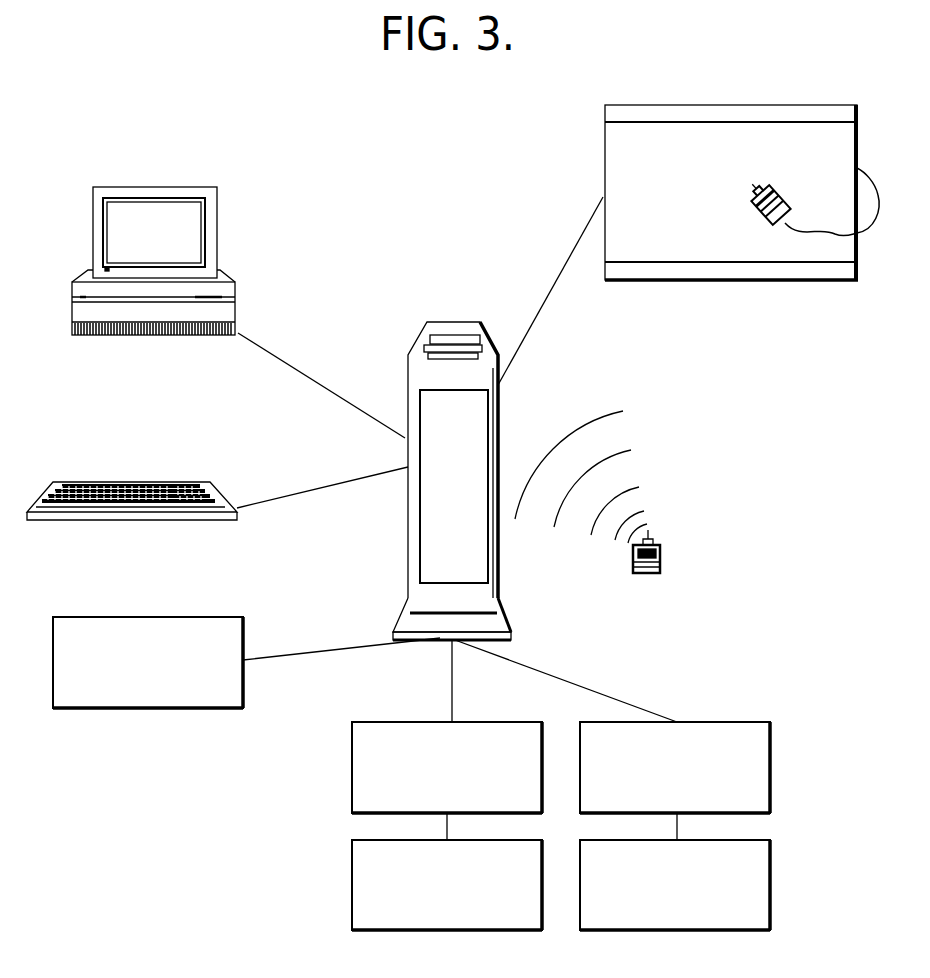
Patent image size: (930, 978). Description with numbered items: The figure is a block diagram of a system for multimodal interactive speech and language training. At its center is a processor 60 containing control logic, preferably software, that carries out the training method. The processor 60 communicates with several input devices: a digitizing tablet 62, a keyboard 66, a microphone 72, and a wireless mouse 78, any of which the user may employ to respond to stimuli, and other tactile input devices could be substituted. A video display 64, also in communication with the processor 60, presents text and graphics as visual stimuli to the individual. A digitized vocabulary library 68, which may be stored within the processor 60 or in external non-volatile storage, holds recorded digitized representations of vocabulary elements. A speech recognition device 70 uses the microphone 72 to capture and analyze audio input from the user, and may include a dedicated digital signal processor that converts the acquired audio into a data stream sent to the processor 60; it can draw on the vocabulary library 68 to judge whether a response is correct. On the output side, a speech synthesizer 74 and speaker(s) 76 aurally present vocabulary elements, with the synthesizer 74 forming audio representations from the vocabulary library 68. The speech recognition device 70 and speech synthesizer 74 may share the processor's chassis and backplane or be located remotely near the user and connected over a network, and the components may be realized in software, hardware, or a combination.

The processor 60 is at (458, 320).
The digitizing tablet 62 is at (856, 110).
The video display 64 is at (218, 186).
The keyboard 66 is at (143, 482).
The digitized vocabulary library 68 is at (53, 617).
The speech recognition device 70 is at (352, 722).
The microphone 72 is at (352, 840).
The speech synthesizer 74 is at (770, 722).
The speaker(s) 76 is at (770, 840).
The wireless mouse 78 is at (660, 562).